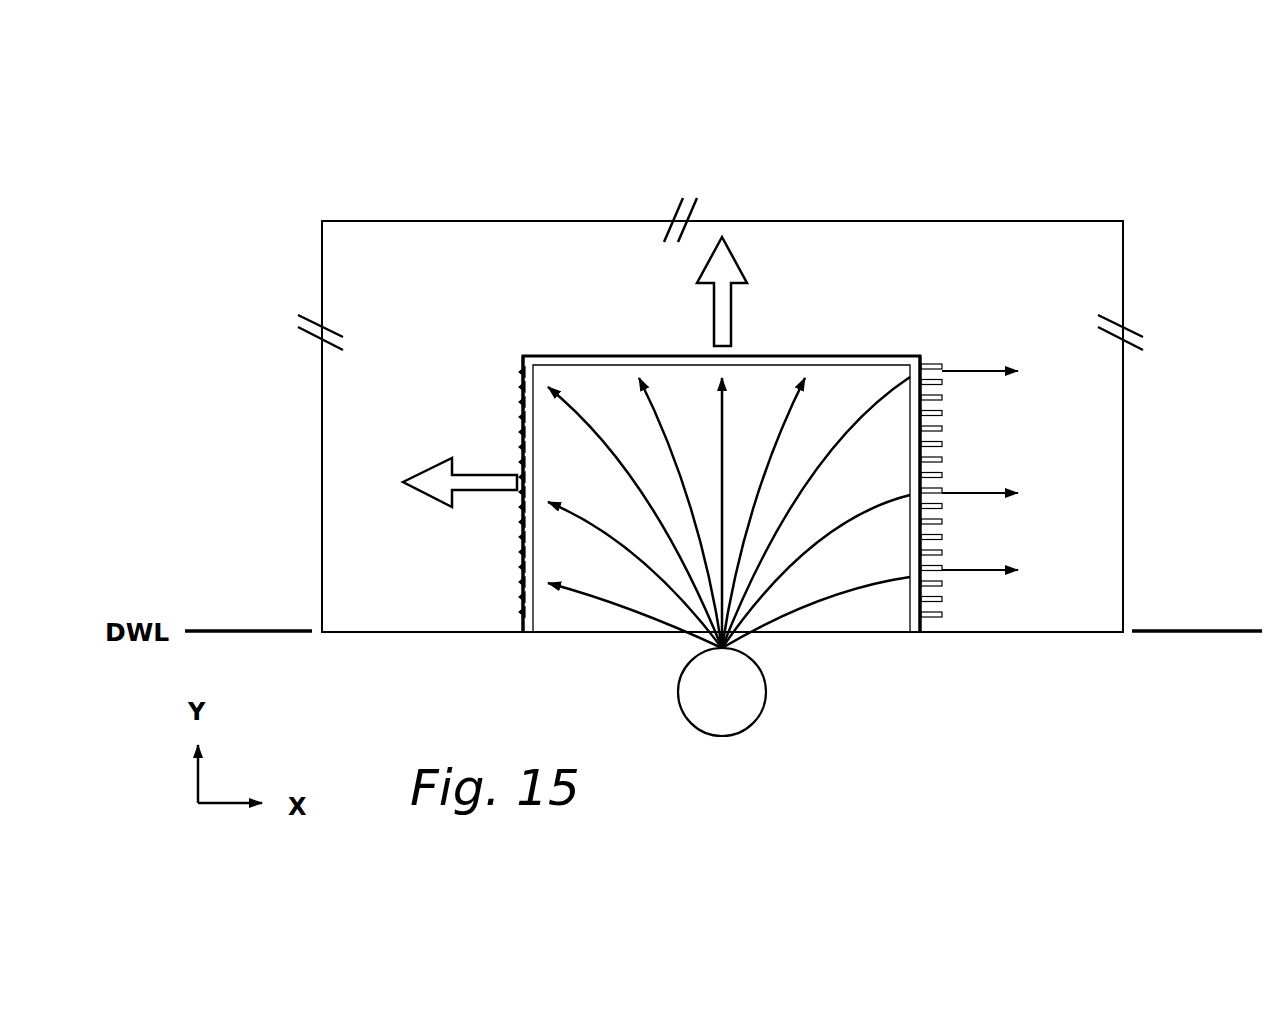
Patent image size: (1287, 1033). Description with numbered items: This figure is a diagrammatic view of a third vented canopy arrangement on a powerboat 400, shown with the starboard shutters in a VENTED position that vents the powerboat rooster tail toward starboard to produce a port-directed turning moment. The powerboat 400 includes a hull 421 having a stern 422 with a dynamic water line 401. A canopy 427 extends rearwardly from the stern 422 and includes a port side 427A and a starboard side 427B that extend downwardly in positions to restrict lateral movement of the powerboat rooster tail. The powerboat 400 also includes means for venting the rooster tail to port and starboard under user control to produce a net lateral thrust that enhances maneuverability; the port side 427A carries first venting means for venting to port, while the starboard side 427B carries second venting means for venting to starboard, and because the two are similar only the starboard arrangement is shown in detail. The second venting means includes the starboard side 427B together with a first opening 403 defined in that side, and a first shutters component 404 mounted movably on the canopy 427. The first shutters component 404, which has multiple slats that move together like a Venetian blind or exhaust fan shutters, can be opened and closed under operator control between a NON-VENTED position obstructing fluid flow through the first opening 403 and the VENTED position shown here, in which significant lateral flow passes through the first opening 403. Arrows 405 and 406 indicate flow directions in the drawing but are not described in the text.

The powerboat 400 is at (298, 163).
The dynamic water line 401 is at (1178, 634).
The first opening 403 is at (892, 557).
The first shutters component 404 is at (948, 452).
The leftward light output arrow 405 is at (423, 483).
The upward light output arrow 406 is at (727, 263).
The hull 421 is at (318, 380).
The stern 422 is at (1105, 243).
The canopy 427 is at (558, 352).
The port side 427A is at (535, 615).
The starboard side 427B is at (920, 617).